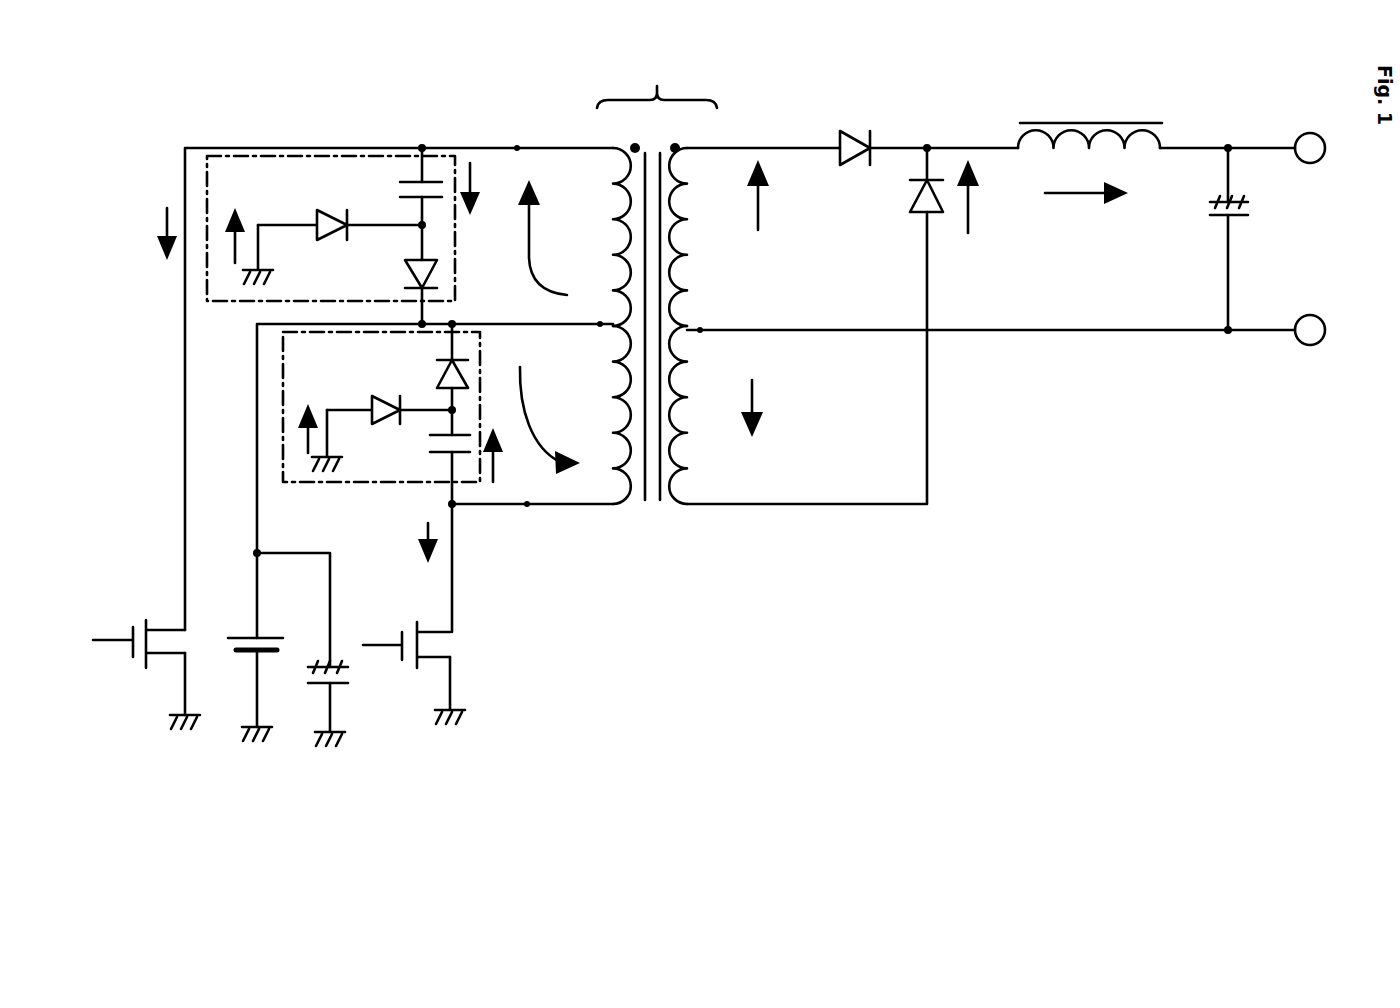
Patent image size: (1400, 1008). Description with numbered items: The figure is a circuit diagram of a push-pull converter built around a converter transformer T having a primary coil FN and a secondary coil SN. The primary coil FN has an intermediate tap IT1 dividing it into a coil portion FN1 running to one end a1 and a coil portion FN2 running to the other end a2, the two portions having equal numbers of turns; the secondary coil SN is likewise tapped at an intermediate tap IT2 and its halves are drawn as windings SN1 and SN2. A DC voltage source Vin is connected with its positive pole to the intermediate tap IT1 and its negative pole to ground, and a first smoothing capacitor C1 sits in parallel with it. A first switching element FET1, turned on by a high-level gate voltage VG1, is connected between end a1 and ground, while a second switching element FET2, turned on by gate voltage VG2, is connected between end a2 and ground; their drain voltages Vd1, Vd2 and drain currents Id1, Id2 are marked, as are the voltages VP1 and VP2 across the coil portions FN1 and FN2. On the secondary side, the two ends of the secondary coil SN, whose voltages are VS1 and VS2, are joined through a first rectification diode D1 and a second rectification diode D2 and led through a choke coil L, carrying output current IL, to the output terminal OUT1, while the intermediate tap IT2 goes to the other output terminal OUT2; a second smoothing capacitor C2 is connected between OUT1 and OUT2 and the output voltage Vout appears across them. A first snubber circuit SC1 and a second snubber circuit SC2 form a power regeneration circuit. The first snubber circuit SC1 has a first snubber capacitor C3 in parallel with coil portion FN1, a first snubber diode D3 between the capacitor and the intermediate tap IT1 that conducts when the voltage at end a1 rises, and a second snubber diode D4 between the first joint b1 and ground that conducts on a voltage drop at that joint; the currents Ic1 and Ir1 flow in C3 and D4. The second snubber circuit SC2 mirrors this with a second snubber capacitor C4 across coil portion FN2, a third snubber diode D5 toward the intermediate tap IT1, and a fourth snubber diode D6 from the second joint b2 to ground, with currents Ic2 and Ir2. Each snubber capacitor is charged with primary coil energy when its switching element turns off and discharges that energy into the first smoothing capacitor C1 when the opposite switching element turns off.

The first snubber circuit SC1 is at (336, 146).
The second snubber circuit SC2 is at (348, 484).
The first snubber capacitor C3 is at (408, 188).
The second snubber diode D4 is at (332, 232).
The first snubber diode D3 is at (407, 277).
The first joint b1 is at (420, 228).
The current flowing in the second snubber diode Ir1 is at (235, 223).
The current flowing in the first snubber capacitor Ic1 is at (474, 200).
The drain current Id1 is at (146, 234).
The voltage across the coil portion FN1 VP1 is at (537, 225).
The one end of the primary coil a1 is at (517, 148).
The third snubber diode D5 is at (437, 374).
The fourth snubber diode D6 is at (382, 419).
The second snubber capacitor C4 is at (443, 456).
The second joint b2 is at (448, 414).
The current flowing in the fourth snubber diode Ir2 is at (308, 418).
The current flowing in the second snubber capacitor Ic2 is at (502, 443).
The voltage across the coil portion FN2 VP2 is at (550, 434).
The other end of the primary coil a2 is at (527, 506).
The drain current Id2 is at (432, 563).
The converter transformer T is at (657, 282).
The primary coil FN is at (620, 132).
The secondary coil SN is at (691, 132).
The first coil portion FN1 is at (596, 237).
The second coil portion FN2 is at (596, 415).
The first secondary winding SN1 is at (704, 237).
The second secondary winding SN2 is at (701, 415).
The intermediate tap IT1 is at (589, 337).
The intermediate tap IT2 is at (716, 316).
The voltage at one end of the secondary coil VS1 is at (774, 195).
The voltage at the other end of the secondary coil VS2 is at (768, 408).
The first rectification diode D1 is at (855, 164).
The second rectification diode D2 is at (911, 196).
The output voltage Vout is at (992, 196).
The choke coil L is at (1090, 119).
The output current IL is at (1086, 203).
The second smoothing capacitor C2 is at (1247, 208).
The output terminal OUT1 is at (1313, 132).
The other output terminal OUT2 is at (1310, 347).
The first switching element FET1 is at (137, 674).
The second switching element FET2 is at (455, 673).
The gate voltage VG1 is at (88, 607).
The gate voltage VG2 is at (412, 687).
The drain voltage Vd1 is at (153, 583).
The drain voltage Vd2 is at (482, 605).
The DC voltage source Vin is at (247, 689).
The first smoothing capacitor C1 is at (335, 703).